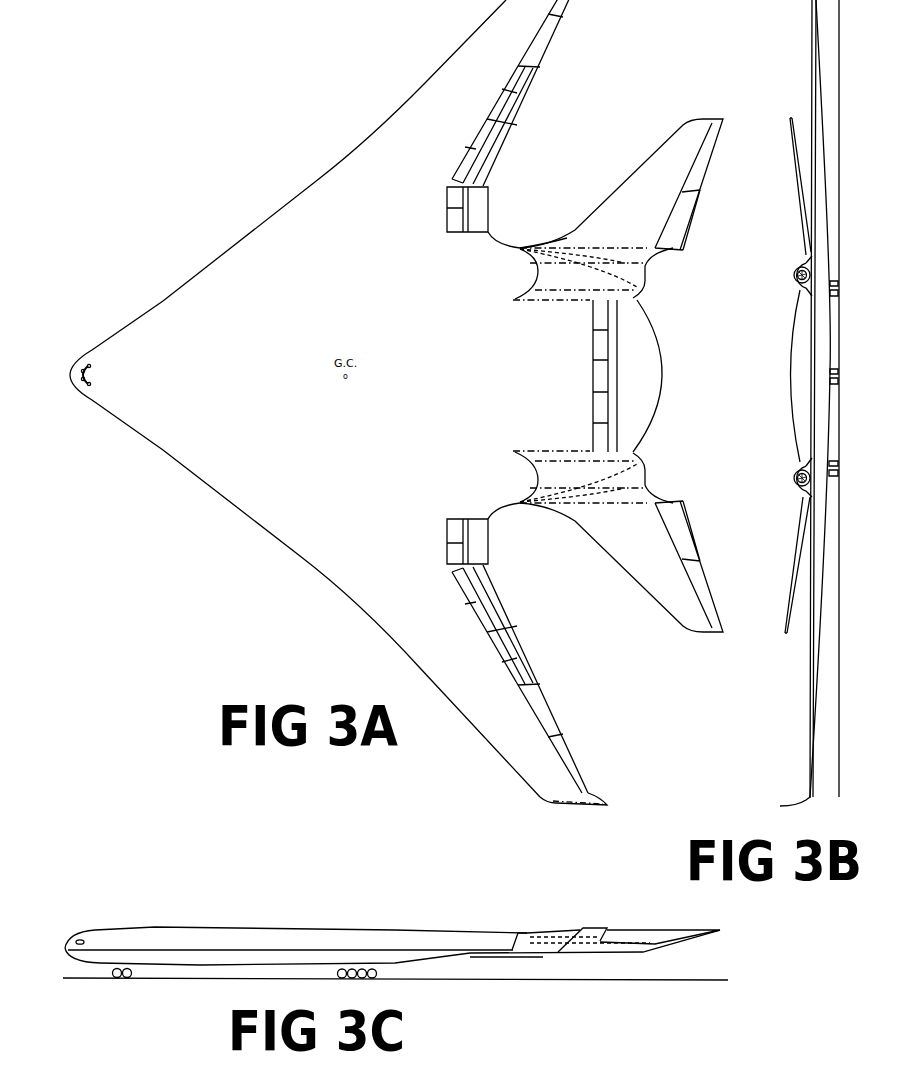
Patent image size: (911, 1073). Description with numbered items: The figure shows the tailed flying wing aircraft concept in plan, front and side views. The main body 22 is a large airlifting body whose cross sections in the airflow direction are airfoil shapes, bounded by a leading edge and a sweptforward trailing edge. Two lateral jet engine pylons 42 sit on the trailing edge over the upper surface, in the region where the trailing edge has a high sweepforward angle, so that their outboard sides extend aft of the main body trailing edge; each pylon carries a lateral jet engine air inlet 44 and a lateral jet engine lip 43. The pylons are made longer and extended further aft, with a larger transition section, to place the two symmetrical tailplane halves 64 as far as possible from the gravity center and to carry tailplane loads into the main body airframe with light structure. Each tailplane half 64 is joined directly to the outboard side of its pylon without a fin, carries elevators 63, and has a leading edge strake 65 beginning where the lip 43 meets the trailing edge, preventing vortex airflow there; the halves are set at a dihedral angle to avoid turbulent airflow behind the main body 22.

In FIG. 3C, the main body 22 is at (150, 937).
In FIG. 3A, the lateral jet engine pylon 42 is at (637, 287).
In FIG. 3A, the lateral jet engine lip 43 is at (530, 503).
In FIG. 3C, the lateral jet engine air inlet 44 is at (513, 942).
In FIG. 3A, the elevators 63 is at (678, 228).
In FIG. 3A, the tailplane half 64 is at (633, 188).
In FIG. 3A, the tailplane half leading edge strake 65 is at (570, 242).